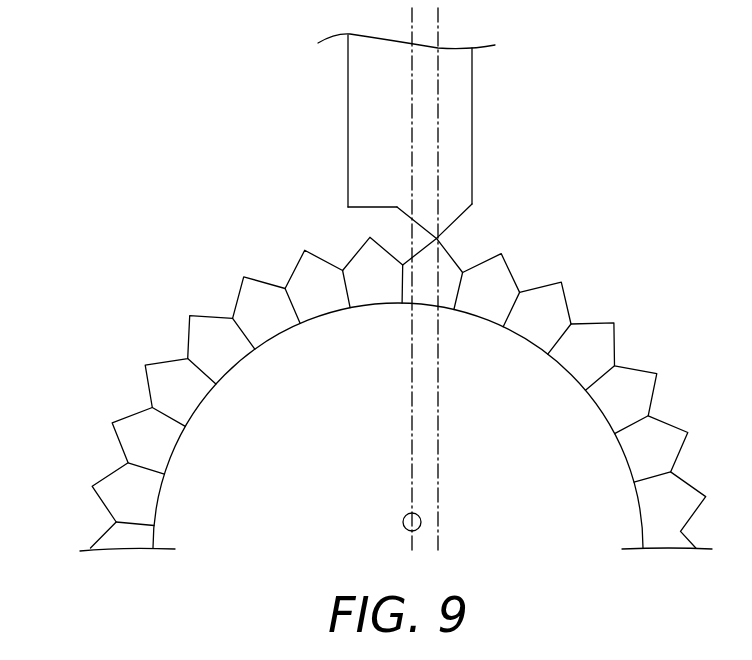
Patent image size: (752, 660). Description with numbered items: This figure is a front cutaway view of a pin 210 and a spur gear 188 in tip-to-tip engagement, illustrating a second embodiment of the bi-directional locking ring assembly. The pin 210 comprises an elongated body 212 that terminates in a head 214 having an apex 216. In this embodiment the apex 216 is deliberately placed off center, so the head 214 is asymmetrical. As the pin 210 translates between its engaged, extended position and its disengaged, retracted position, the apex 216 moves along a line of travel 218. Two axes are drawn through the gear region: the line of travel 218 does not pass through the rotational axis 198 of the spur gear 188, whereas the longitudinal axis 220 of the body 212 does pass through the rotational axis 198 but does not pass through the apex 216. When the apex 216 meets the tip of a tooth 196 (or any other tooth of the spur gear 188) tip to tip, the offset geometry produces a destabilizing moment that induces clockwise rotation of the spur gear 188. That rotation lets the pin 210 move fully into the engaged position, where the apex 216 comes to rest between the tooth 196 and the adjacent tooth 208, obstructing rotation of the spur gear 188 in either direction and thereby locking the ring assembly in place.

The spur gear 188 is at (396, 394).
The tooth 196 is at (447, 286).
The rotational axis 198 is at (403, 520).
The tooth 208 is at (375, 292).
The pin 210 is at (427, 140).
The elongated body 212 is at (358, 72).
The head 214 is at (357, 183).
The apex 216 is at (443, 227).
The line of travel 218 is at (438, 492).
The longitudinal axis 220 is at (412, 467).